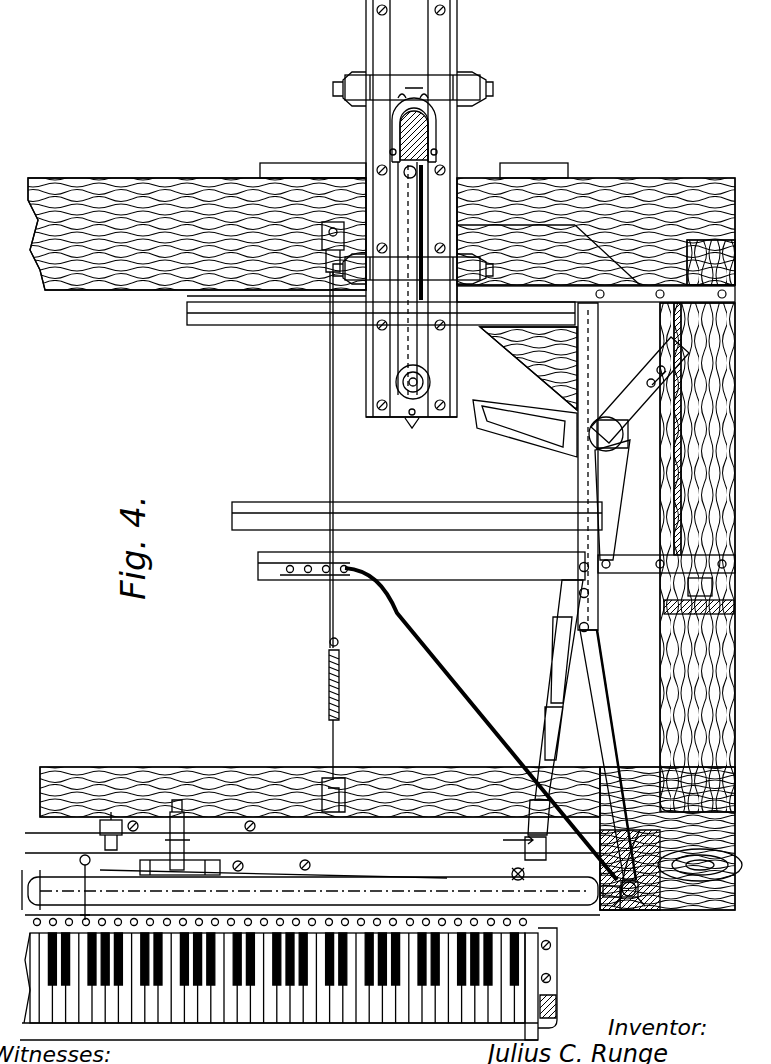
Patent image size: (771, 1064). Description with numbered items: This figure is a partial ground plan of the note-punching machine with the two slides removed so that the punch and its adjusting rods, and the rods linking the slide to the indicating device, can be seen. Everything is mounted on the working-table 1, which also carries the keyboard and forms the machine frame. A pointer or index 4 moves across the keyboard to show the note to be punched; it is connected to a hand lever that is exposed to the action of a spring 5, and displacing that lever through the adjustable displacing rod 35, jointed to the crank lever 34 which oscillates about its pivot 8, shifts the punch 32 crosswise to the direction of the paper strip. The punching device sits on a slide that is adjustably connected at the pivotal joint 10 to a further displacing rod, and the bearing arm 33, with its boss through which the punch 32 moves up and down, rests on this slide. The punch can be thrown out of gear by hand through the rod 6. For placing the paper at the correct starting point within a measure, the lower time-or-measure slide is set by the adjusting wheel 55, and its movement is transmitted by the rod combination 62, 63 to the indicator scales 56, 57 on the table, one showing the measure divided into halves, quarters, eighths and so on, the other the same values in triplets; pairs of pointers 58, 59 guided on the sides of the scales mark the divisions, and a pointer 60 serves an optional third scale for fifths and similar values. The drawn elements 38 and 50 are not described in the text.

The working-table 1 is at (590, 195).
The pointer or index 4 is at (180, 990).
The spring 5 is at (168, 840).
The rod 6 is at (406, 68).
The pivot 8 is at (590, 440).
The pivotal joint 10 is at (412, 426).
The punch 32 is at (400, 374).
The bearing arm 33 is at (414, 100).
The crank lever 34 is at (497, 430).
The displacing rod 35 is at (352, 872).
The keys 38 is at (277, 978).
The spring rod 50 is at (112, 880).
The adjusting wheel 55 is at (200, 862).
The scale 56 is at (78, 862).
The scale 57 is at (410, 880).
The indicator or pointer 58 is at (98, 830).
The indicator or pointer 59 is at (248, 834).
The indicator or pointer 60 is at (512, 872).
The rod combination 62 is at (428, 660).
The rod combination 63 is at (624, 900).